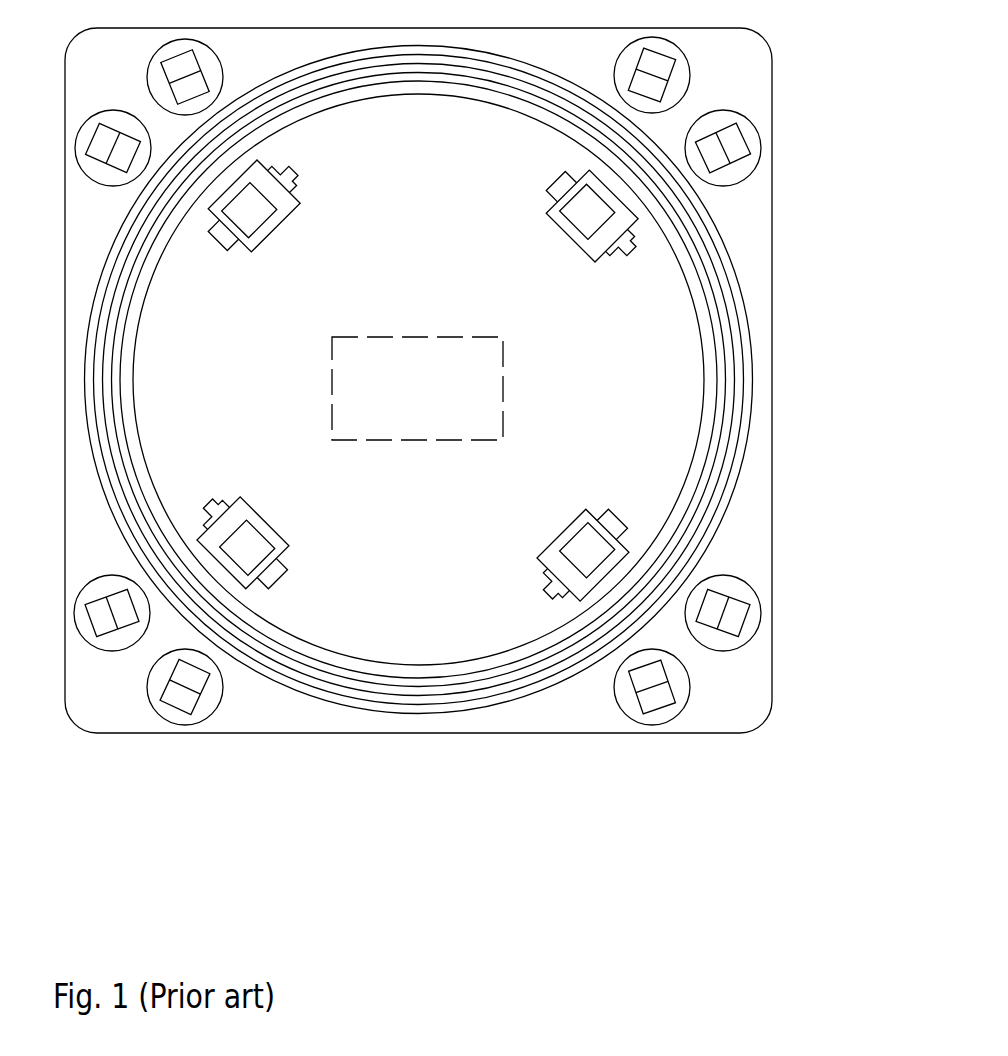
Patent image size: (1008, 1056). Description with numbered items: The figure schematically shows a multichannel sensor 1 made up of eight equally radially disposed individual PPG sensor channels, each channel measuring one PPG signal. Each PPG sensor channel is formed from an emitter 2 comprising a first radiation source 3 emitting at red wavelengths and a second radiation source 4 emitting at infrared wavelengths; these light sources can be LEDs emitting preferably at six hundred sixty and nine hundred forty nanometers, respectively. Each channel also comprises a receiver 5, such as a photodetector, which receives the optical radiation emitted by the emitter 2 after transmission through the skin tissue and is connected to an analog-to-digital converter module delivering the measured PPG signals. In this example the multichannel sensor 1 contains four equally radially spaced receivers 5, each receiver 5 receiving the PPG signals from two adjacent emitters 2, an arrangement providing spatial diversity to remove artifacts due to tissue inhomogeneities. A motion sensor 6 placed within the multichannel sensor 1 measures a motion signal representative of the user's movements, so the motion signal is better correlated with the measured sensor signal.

The multichannel sensor 1 is at (150, 790).
The emitter 2 is at (690, 62).
The first radiation source 3 is at (738, 147).
The second radiation source 4 is at (715, 157).
The receiver 5 is at (588, 217).
The motion sensor 6 is at (468, 405).